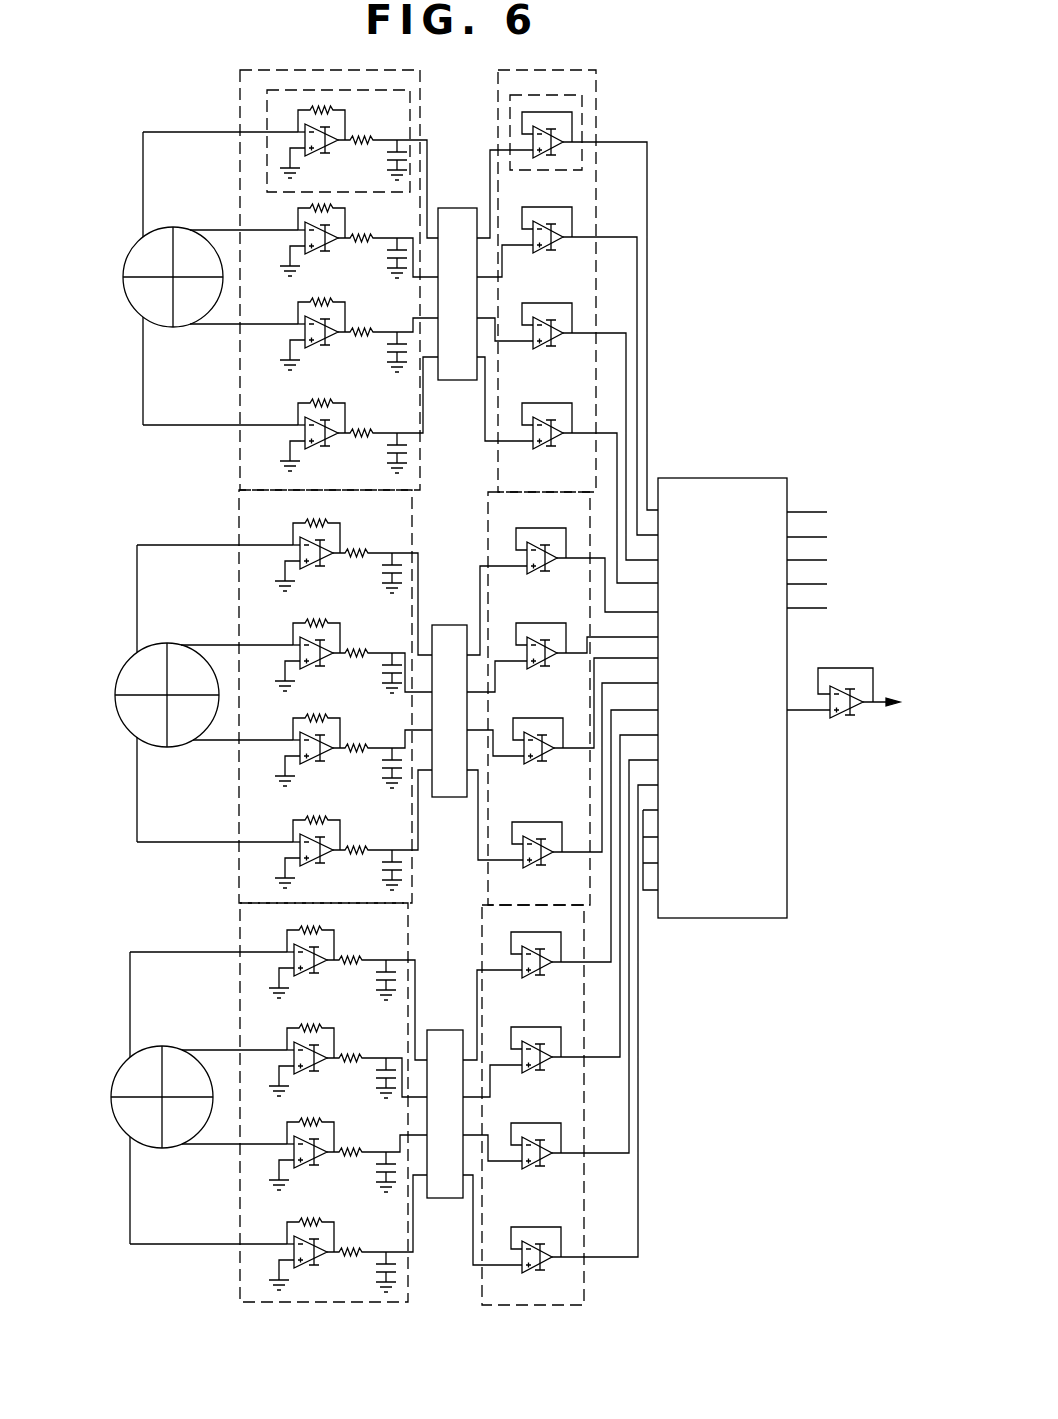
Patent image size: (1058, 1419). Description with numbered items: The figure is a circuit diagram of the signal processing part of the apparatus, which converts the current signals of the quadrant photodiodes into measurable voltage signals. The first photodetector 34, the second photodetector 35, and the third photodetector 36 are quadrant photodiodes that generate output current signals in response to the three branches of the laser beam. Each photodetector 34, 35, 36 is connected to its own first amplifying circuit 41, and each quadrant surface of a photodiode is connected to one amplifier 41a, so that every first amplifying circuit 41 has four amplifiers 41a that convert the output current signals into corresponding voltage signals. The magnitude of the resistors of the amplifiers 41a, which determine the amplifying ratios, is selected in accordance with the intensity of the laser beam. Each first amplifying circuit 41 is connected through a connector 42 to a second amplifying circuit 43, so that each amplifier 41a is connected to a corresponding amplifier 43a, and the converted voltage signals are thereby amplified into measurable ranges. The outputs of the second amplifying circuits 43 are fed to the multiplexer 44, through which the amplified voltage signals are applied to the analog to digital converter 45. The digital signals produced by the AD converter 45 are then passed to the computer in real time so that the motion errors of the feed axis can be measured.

The first photodetector 34 is at (123, 277).
The second photodetector 35 is at (115, 695).
The third photodetector 36 is at (111, 1097).
The first amplifying circuit 41 is at (240, 158).
The amplifier 41a is at (267, 90).
The connector 42 is at (460, 208).
The second amplifying circuit 43 is at (598, 98).
The amplifier 43a is at (582, 128).
The multiplexer 44 is at (750, 478).
The analog to digital converter 45 is at (846, 703).